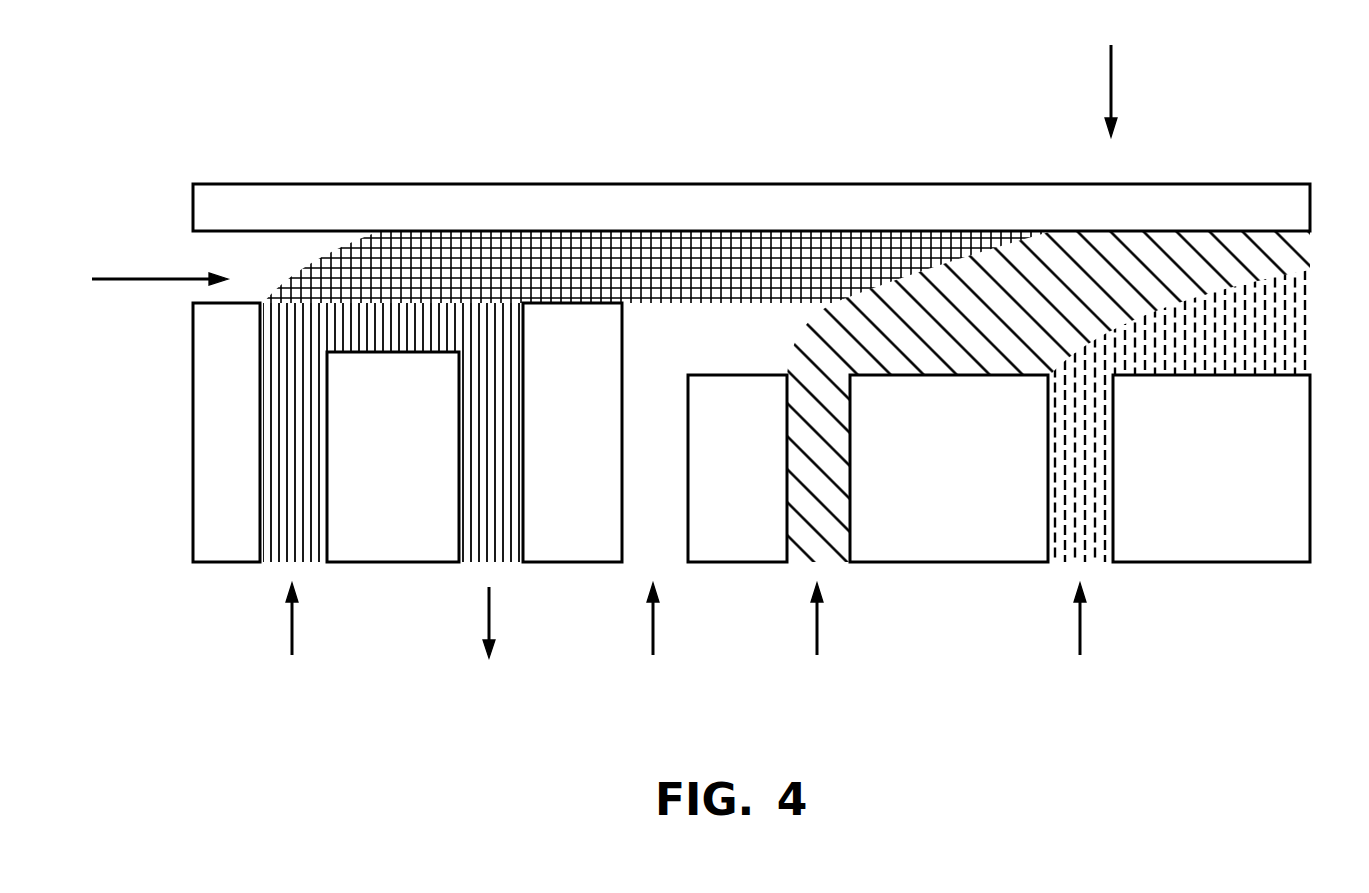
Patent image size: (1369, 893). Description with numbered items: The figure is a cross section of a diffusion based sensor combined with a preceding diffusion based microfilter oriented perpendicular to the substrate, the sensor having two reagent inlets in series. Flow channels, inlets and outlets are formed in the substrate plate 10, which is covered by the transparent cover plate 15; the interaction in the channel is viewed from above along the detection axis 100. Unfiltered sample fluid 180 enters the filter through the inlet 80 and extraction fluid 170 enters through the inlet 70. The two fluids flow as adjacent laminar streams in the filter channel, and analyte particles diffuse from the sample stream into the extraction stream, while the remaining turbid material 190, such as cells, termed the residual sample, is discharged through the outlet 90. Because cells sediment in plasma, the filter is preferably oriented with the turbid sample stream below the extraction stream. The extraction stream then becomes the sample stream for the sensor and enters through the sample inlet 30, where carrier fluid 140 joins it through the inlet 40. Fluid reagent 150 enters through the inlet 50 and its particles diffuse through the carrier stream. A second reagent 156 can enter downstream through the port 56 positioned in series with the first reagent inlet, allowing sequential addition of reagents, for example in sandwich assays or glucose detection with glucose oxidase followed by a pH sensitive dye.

The substrate plate 10 is at (1312, 462).
The transparent cover plate 15 is at (1312, 204).
The sample inlet 30 is at (572, 306).
The inlet 40 is at (622, 433).
The inlet 50 is at (850, 472).
The port 56 is at (1113, 472).
The inlet 70 is at (232, 308).
The inlet 80 is at (328, 480).
The outlet 90 is at (458, 433).
The detection axis 100 is at (1112, 88).
The carrier fluid 140 is at (651, 631).
The fluid reagent 150 is at (818, 641).
The second reagent 156 is at (1081, 641).
The extraction fluid 170 is at (118, 277).
The unfiltered sample fluid 180 is at (290, 624).
The turbid material 190 is at (487, 608).